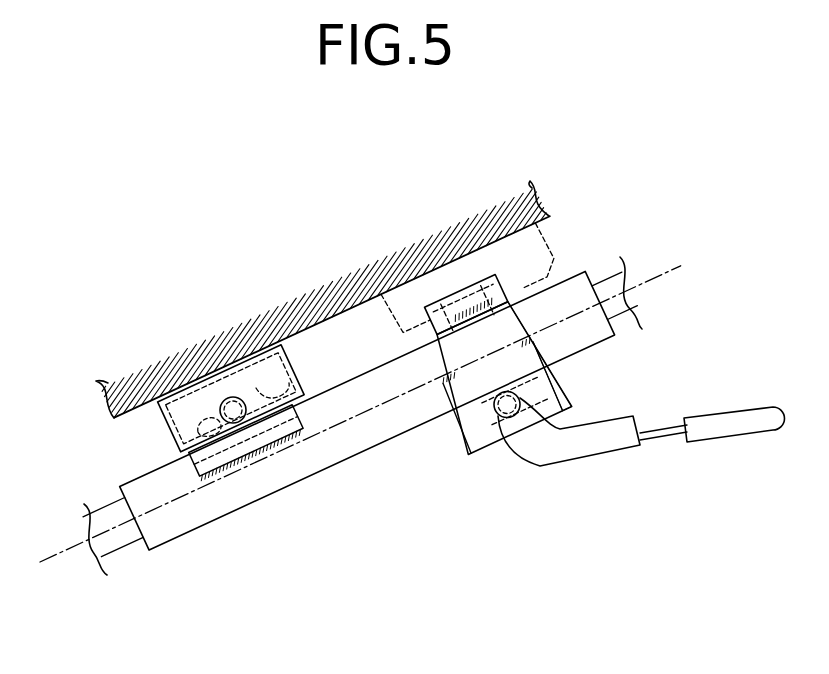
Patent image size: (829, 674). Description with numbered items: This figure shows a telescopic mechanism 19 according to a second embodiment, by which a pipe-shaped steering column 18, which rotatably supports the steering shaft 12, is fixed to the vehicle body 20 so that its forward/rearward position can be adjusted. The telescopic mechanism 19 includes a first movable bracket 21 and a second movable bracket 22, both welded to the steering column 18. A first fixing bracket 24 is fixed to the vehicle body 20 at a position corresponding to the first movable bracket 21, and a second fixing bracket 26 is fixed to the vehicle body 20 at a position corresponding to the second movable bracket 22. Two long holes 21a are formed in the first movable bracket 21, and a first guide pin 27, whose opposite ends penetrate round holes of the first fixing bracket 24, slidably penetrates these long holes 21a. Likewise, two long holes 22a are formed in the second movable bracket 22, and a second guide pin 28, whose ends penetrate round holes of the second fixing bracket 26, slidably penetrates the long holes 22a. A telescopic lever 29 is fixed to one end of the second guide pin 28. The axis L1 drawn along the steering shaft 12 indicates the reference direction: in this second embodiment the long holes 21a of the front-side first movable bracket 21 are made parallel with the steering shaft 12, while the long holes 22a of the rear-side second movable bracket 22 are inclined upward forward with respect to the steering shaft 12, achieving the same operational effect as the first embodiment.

The steering shaft 12 is at (617, 315).
The steering column 18 is at (182, 538).
The telescopic mechanism 19 is at (508, 468).
The vehicle body 20 is at (320, 302).
The first movable bracket 21 is at (281, 449).
The long hole 21a is at (296, 373).
The second movable bracket 22 is at (568, 375).
The long hole 22a is at (566, 393).
The first fixing bracket 24 is at (162, 428).
The second fixing bracket 26 is at (455, 360).
The first guide pin 27 is at (233, 423).
The second guide pin 28 is at (494, 416).
The telescopic lever 29 is at (597, 450).
The axis line L1 is at (340, 430).